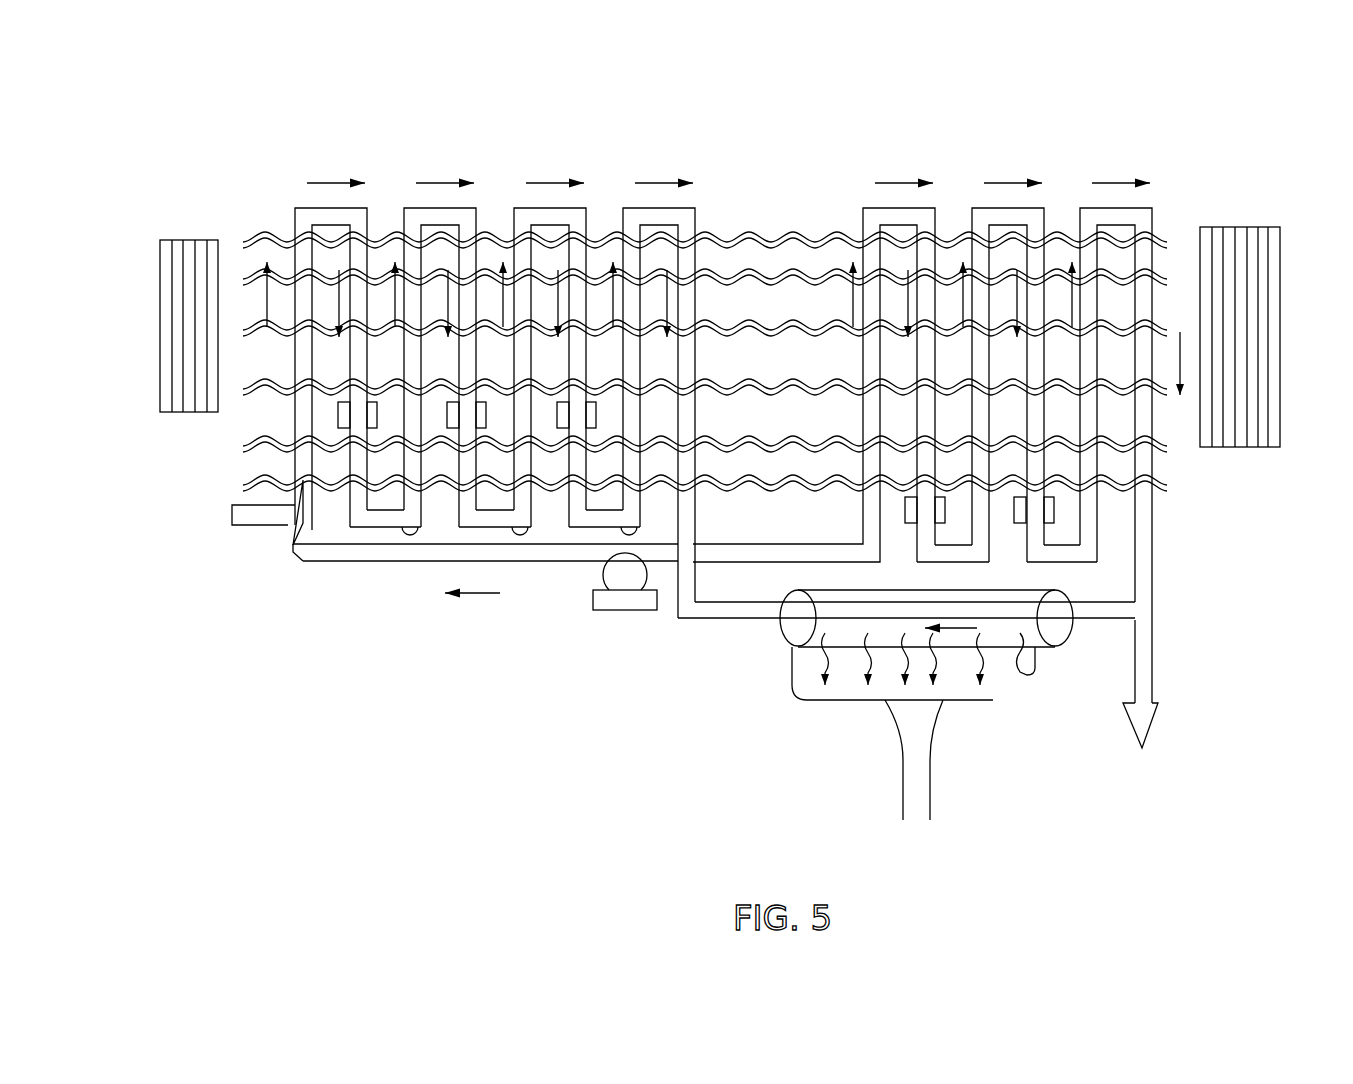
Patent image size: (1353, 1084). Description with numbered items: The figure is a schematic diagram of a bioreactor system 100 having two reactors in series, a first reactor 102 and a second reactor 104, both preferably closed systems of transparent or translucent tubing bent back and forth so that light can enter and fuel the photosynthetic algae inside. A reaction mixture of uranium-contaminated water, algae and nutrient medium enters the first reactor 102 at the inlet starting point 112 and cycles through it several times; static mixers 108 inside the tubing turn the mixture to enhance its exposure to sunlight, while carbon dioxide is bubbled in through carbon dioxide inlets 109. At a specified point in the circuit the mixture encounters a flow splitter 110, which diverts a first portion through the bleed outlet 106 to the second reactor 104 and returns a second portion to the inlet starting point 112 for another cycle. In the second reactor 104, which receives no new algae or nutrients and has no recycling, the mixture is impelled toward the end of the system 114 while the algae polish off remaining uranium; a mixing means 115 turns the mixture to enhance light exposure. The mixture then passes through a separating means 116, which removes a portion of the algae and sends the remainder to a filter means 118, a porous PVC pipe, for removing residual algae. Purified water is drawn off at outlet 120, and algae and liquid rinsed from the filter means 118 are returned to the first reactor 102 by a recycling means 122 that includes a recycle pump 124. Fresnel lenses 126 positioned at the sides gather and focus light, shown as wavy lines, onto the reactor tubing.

The bioreactor system 100 is at (266, 140).
The first reactor 102 is at (610, 168).
The second reactor 104 is at (900, 183).
The bleed outlet 106 is at (700, 528).
The static mixers 108 is at (338, 418).
The carbon dioxide inlets 109 is at (410, 536).
The flow splitter 110 is at (660, 526).
The inlet starting point 112 is at (293, 547).
The end of the system 114 is at (1158, 575).
The mixing means 115 is at (910, 525).
The separating means 116 is at (1158, 612).
The filter means 118 is at (1080, 650).
The outlet 120 is at (917, 832).
The recycling means 122 is at (754, 620).
The recycle pump 124 is at (630, 612).
The Fresnel lenses 126 is at (148, 372).